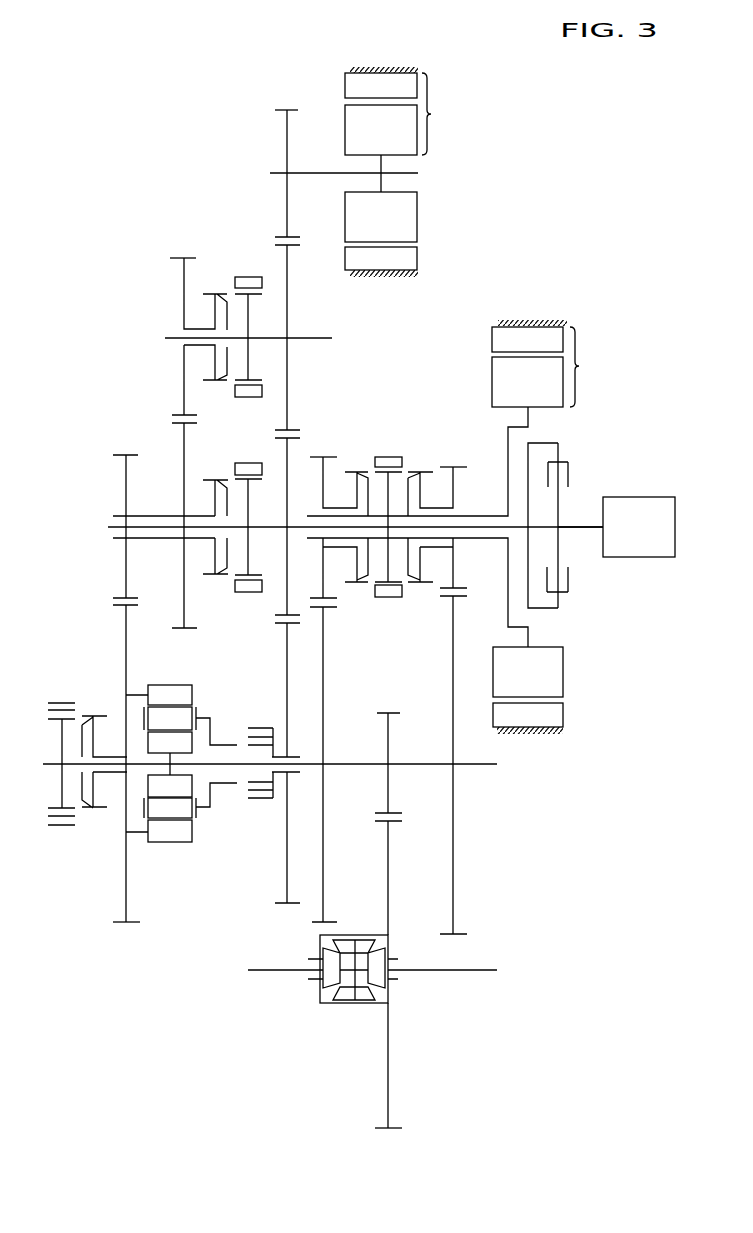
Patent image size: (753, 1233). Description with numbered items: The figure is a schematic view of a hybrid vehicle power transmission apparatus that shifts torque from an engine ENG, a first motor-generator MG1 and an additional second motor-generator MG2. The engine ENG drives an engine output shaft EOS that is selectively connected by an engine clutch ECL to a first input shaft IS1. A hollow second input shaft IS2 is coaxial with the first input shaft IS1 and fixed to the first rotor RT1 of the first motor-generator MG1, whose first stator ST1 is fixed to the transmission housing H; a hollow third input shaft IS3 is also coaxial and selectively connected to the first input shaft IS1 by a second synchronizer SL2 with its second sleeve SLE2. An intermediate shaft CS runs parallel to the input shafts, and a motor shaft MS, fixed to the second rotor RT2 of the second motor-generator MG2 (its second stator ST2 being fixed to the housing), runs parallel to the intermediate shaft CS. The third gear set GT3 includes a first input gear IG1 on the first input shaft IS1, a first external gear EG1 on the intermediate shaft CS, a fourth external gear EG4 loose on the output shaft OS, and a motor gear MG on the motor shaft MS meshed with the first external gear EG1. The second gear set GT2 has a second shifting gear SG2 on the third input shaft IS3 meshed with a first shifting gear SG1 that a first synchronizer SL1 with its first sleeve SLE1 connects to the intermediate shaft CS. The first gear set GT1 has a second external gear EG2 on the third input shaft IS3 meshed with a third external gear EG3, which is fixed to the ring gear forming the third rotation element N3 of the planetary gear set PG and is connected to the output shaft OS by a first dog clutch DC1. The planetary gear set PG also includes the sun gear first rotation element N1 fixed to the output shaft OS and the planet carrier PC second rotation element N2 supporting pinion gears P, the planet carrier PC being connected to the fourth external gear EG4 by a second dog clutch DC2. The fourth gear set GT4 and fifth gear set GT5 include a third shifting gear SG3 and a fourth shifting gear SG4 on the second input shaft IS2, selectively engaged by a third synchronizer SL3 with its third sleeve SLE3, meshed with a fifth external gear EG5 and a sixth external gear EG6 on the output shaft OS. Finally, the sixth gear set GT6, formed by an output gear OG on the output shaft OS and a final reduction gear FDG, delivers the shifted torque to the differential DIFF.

The third gear set GT3 is at (285, 104).
The motor gear MG is at (287, 137).
The first external gear EG1 is at (290, 258).
The first input gear IG1 is at (287, 456).
The fourth external gear EG4 is at (287, 670).
The transmission housing H is at (388, 66).
The second stator ST2 is at (381, 85).
The second rotor RT2 is at (381, 130).
The second motor-generator MG2 is at (438, 114).
The motor shaft MS is at (418, 173).
The second gear set GT2 is at (182, 254).
The first shifting gear SG1 is at (184, 283).
The first sleeve SLE1 is at (240, 276).
The first synchronizer SL1 is at (250, 260).
The intermediate shaft CS is at (313, 337).
The second shifting gear SG2 is at (184, 450).
The third input shaft IS3 is at (150, 540).
The second external gear EG2 is at (126, 480).
The third external gear EG3 is at (126, 648).
The first gear set GT1 is at (125, 930).
The second synchronizer SL2 is at (250, 598).
The second sleeve SLE2 is at (240, 595).
The fourth gear set GT4 is at (331, 451).
The third shifting gear SG3 is at (323, 478).
The fifth external gear EG5 is at (325, 683).
The third sleeve SLE3 is at (381, 456).
The third synchronizer SL3 is at (396, 448).
The fourth shifting gear SG4 is at (452, 477).
The fifth gear set GT5 is at (452, 459).
The sixth external gear EG6 is at (453, 655).
The second input shaft IS2 is at (485, 515).
The first input shaft IS1 is at (485, 539).
The first stator ST1 is at (527, 339).
The first rotor RT1 is at (527, 382).
The first motor-generator MG1 is at (586, 367).
The engine clutch ECL is at (577, 460).
The engine output shaft EOS is at (583, 529).
The engine ENG is at (639, 527).
The third rotation element N3 is at (170, 695).
The pinion gears P is at (170, 718).
The first rotation element N1 is at (170, 743).
The second rotation element N2 is at (192, 707).
The planet carrier PC is at (197, 708).
The planetary gear set PG is at (141, 710).
The first dog clutch DC1 is at (79, 832).
The second dog clutch DC2 is at (238, 806).
The output shaft OS is at (485, 766).
The output gear OG is at (390, 730).
The final reduction gear FDG is at (390, 875).
The sixth gear set GT6 is at (387, 1136).
The differential DIFF is at (319, 1010).